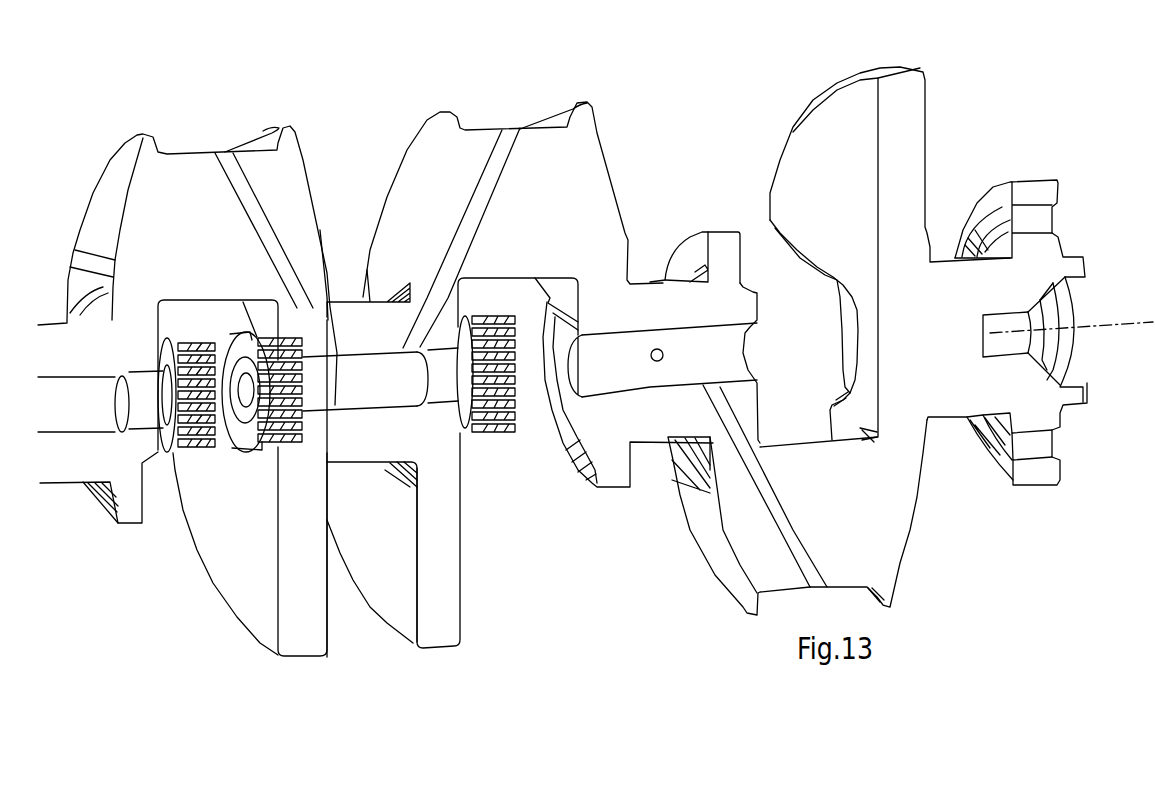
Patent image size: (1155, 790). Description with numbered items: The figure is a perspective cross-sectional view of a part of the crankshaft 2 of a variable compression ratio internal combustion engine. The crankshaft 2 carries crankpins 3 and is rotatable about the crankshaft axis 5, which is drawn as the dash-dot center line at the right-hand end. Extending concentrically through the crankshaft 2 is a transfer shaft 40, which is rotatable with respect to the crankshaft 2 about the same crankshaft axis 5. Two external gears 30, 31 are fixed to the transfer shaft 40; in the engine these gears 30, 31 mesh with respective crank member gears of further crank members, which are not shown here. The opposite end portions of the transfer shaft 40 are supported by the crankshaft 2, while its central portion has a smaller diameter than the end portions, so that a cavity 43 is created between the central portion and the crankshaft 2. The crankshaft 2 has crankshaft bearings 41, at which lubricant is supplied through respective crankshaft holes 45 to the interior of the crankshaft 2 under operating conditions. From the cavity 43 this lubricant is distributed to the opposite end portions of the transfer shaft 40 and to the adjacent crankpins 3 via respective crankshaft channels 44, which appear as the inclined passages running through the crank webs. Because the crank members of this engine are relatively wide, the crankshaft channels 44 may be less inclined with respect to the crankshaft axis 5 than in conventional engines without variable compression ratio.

The crankshaft 2 is at (608, 141).
The crankpin 3 is at (190, 167).
The crankshaft axis 5 is at (1098, 323).
The external gear 30 is at (262, 445).
The external gear 31 is at (492, 432).
The transfer shaft 40 is at (432, 398).
The crankshaft bearing 41 is at (350, 297).
The cavity 43 is at (353, 410).
The crankshaft channel 44 is at (240, 193).
The crankshaft hole 45 is at (652, 360).